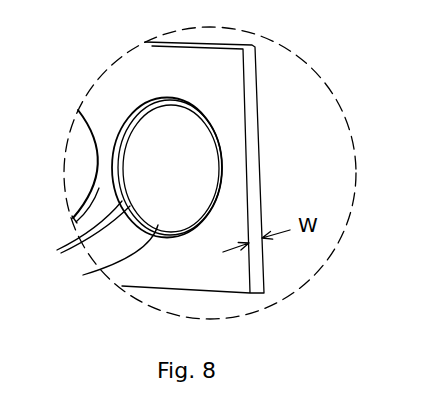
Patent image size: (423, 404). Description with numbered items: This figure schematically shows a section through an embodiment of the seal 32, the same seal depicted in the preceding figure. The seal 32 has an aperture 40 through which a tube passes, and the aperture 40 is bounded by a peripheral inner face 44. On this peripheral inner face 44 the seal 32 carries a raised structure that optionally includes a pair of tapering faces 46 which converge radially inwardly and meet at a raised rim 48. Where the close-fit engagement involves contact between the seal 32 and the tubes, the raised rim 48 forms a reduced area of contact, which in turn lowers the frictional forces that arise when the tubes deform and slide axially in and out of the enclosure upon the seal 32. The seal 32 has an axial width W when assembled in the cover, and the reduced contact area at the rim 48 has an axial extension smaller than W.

The seal 32 is at (257, 125).
The aperture 40 is at (148, 137).
The peripheral inner face 44 is at (113, 162).
The tapering faces 46 is at (75, 238).
The raised rim 48 is at (104, 262).